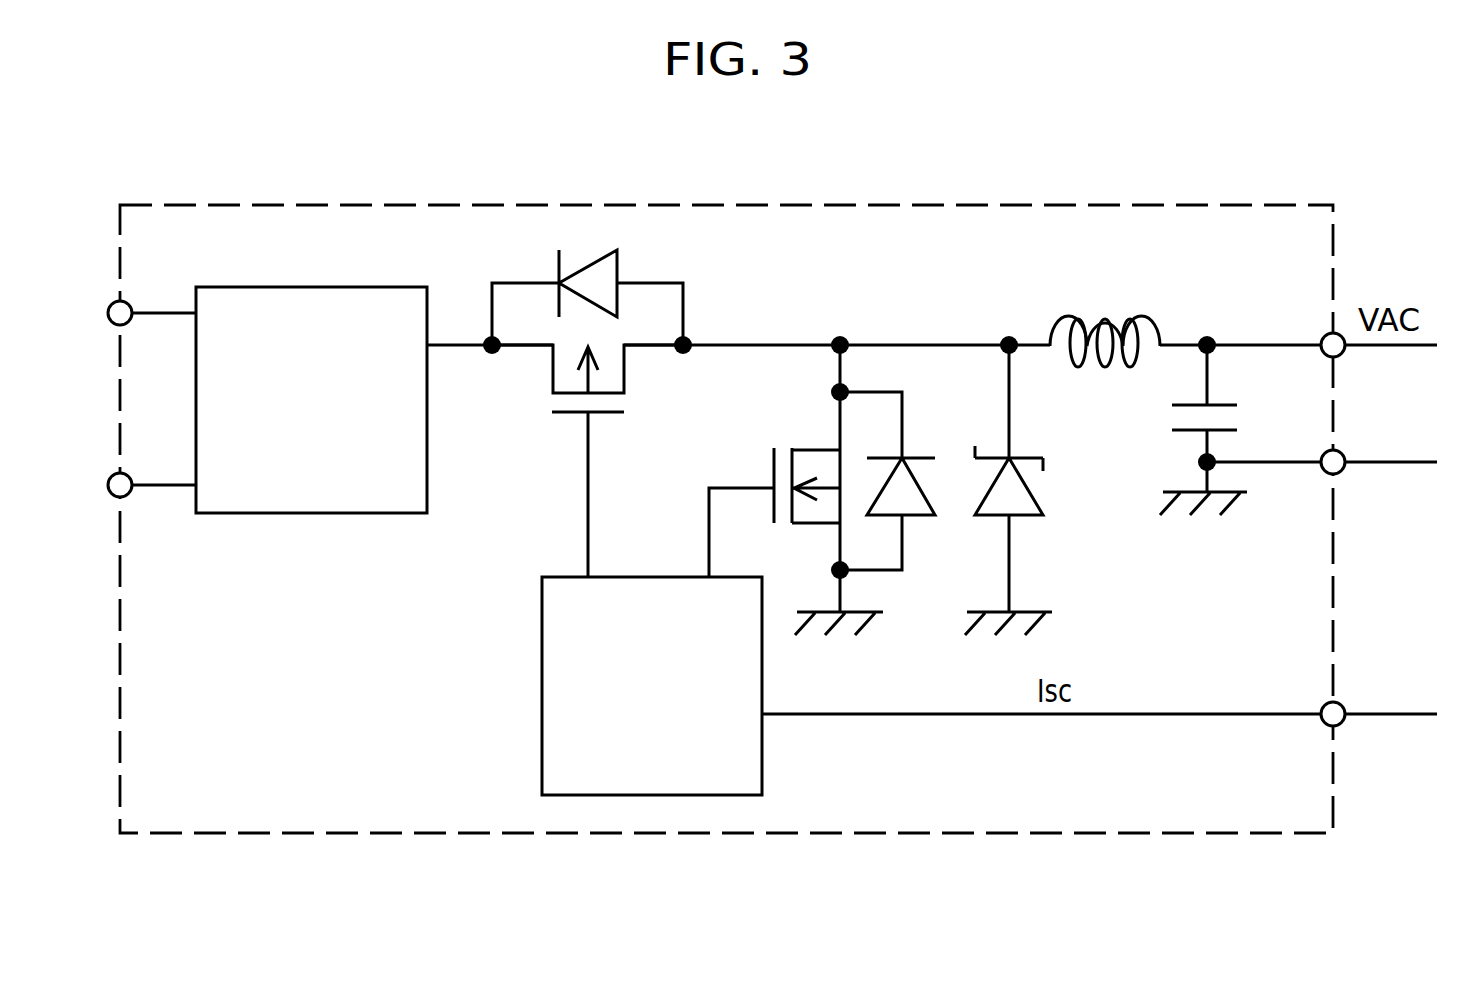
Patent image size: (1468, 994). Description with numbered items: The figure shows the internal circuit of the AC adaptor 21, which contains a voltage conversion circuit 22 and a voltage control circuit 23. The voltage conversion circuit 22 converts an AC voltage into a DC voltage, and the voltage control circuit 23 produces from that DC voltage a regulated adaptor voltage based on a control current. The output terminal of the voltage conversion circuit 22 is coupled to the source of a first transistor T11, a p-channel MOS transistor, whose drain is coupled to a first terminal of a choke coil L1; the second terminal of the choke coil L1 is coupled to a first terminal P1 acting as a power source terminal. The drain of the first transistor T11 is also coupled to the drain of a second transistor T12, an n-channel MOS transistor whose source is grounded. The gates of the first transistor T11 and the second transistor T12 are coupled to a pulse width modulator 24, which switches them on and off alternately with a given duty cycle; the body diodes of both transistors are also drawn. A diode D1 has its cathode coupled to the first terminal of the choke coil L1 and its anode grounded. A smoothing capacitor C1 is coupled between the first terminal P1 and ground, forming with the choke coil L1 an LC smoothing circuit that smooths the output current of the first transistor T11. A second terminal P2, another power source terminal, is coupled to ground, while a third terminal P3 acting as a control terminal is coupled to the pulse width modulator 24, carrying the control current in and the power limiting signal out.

The AC adaptor 21 is at (885, 205).
The voltage conversion circuit 22 is at (252, 287).
The voltage control circuit 23 is at (360, 655).
The pulse width modulator 24 is at (762, 760).
The first transistor T11 is at (572, 413).
The second transistor T12 is at (772, 470).
The choke coil L1 is at (1098, 318).
The smoothing capacitor C1 is at (1190, 431).
The diode D1 is at (1030, 493).
The first terminal P1 is at (1325, 335).
The second terminal P2 is at (1323, 450).
The third terminal P3 is at (1325, 705).